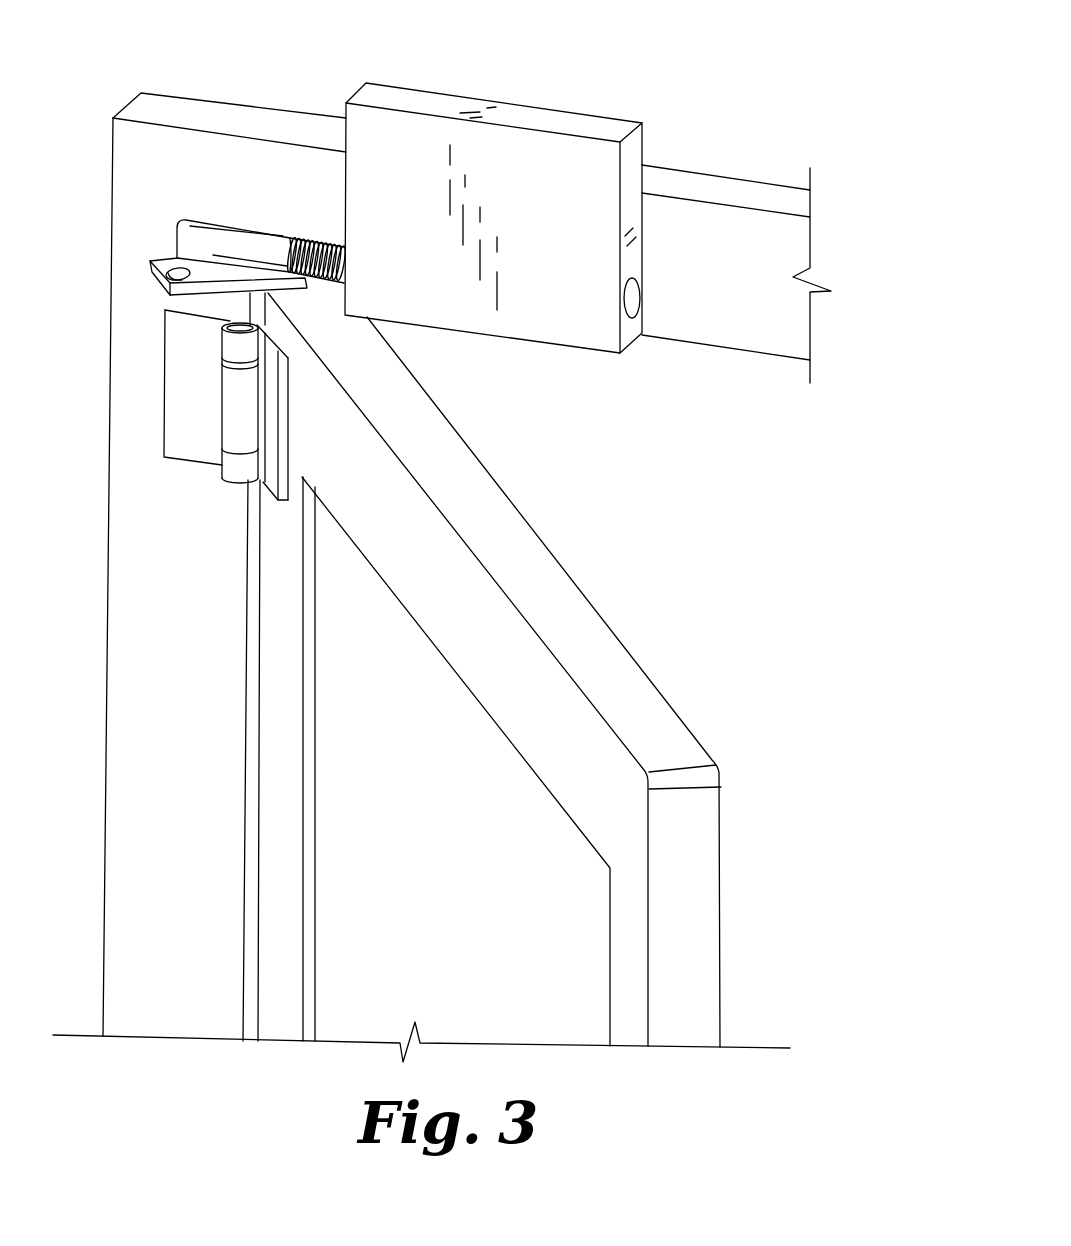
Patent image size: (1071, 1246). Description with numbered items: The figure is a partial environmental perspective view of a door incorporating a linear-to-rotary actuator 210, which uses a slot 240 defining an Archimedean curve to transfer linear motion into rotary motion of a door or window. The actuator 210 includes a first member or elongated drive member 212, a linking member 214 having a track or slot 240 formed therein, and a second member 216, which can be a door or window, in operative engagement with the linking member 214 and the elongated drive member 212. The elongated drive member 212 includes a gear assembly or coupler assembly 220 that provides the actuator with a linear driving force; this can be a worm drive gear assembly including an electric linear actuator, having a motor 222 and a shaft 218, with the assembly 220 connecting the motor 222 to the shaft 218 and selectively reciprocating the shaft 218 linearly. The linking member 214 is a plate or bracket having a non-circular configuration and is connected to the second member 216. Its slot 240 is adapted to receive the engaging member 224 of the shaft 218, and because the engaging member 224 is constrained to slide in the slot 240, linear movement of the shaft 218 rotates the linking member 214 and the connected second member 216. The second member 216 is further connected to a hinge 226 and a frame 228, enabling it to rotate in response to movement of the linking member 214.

The linear-to-rotary actuator 210 is at (190, 164).
The elongated drive member 212 is at (545, 88).
The linking member 214 is at (155, 288).
The second member 216 is at (508, 522).
The shaft 218 is at (248, 220).
The gear assembly 220 is at (556, 199).
The motor 222 is at (390, 160).
The engaging member 224 is at (197, 282).
The hinge 226 is at (190, 445).
The frame 228 is at (132, 660).
The slot 240 is at (160, 250).